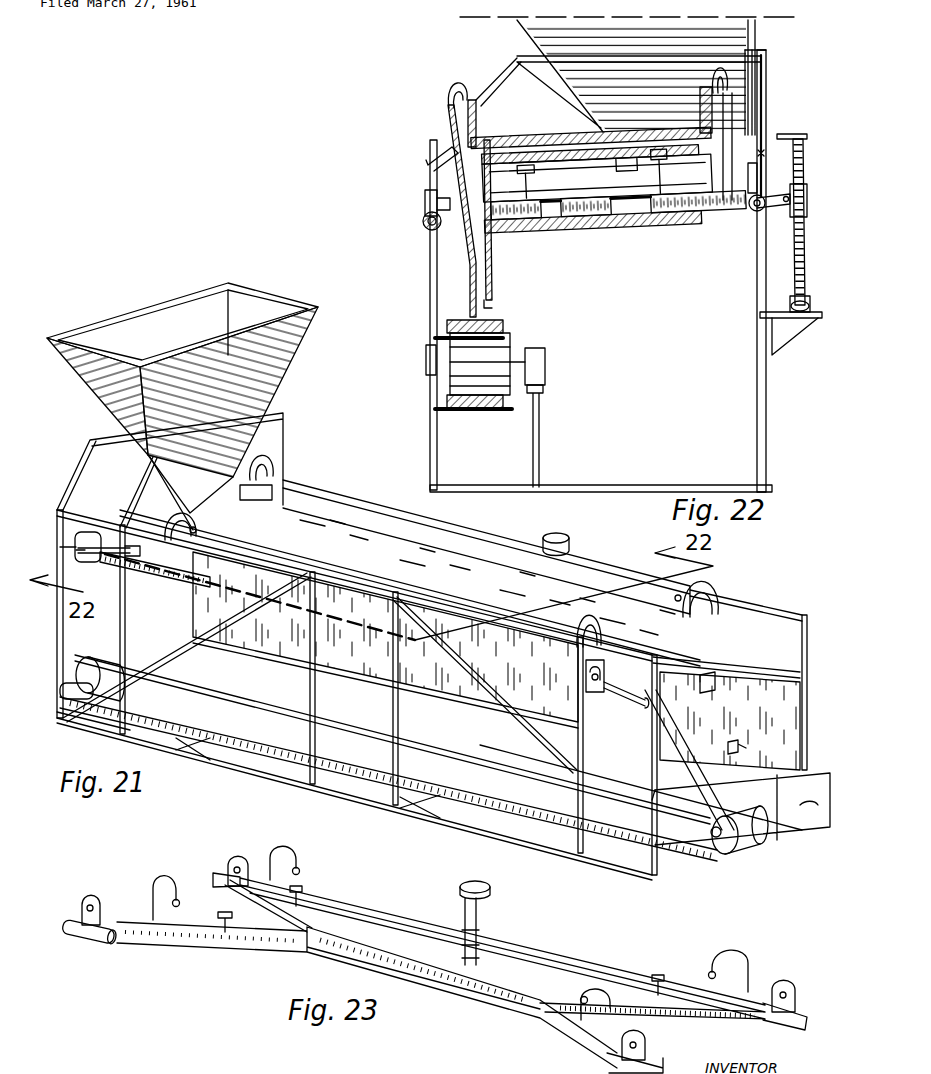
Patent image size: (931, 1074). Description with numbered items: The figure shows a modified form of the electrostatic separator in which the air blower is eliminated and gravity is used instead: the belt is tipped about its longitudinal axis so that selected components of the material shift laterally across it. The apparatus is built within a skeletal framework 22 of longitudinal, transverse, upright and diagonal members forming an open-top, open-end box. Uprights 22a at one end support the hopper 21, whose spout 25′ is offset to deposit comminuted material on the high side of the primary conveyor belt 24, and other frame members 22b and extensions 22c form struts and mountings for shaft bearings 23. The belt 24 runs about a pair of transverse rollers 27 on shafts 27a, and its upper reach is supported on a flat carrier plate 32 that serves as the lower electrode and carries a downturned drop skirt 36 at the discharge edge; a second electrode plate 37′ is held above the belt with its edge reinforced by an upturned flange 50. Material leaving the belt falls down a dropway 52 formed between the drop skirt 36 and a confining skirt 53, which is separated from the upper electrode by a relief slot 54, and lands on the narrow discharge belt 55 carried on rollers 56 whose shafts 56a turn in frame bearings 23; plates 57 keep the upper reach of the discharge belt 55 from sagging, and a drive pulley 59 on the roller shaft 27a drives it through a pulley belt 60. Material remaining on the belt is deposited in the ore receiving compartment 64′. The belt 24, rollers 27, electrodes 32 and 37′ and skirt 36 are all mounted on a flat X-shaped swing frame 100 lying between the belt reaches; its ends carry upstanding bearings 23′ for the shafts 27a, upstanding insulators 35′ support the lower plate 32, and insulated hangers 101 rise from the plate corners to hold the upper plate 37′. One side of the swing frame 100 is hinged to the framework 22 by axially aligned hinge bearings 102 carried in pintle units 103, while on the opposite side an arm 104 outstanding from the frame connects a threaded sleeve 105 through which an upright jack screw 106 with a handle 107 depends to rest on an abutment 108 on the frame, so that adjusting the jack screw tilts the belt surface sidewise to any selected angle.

In FIG. 22, the hopper 21 is at (747, 44).
In FIG. 21, the hopper 21 is at (300, 330).
In FIG. 22, the skeletal framework 22 is at (714, 486).
In FIG. 21, the skeletal framework 22 is at (262, 768).
In FIG. 21, the uprights 22a is at (80, 455).
In FIG. 21, the frame members 22b is at (74, 545).
In FIG. 21, the frame extensions 22c is at (706, 858).
In FIG. 21, the shaft bearings 23 is at (60, 690).
In FIG. 22, the upstanding bearings 23′ is at (425, 204).
In FIG. 21, the upstanding bearings 23′ is at (62, 554).
In FIG. 23, the upstanding bearings 23′ is at (80, 912).
In FIG. 22, the primary conveyor belt 24 is at (632, 230).
In FIG. 21, the primary conveyor belt 24 is at (250, 486).
In FIG. 22, the hopper spout 25′ is at (705, 124).
In FIG. 21, the hopper spout 25′ is at (258, 470).
In FIG. 22, the transverse rollers 27 is at (614, 181).
In FIG. 21, the transverse rollers 27 is at (133, 512).
In FIG. 22, the roller shafts 27a is at (427, 182).
In FIG. 22, the carrier plate 32 is at (619, 168).
In FIG. 22, the upstanding insulators 35′ is at (662, 180).
In FIG. 23, the upstanding insulators 35′ is at (222, 912).
In FIG. 22, the drop skirt 36 is at (492, 270).
In FIG. 22, the upper electrode plate 37′ is at (515, 140).
In FIG. 21, the upper electrode plate 37′ is at (449, 539).
In FIG. 22, the upturned reinforcing flange 50 is at (480, 66).
In FIG. 22, the dropway 52 is at (494, 306).
In FIG. 21, the dropway 52 is at (580, 708).
In FIG. 22, the confining skirt 53 is at (470, 268).
In FIG. 21, the confining skirt 53 is at (385, 640).
In FIG. 22, the relief slot 54 is at (445, 140).
In FIG. 22, the discharge belt 55 is at (503, 320).
In FIG. 21, the discharge belt 55 is at (252, 730).
In FIG. 22, the discharge belt rollers 56 is at (510, 350).
In FIG. 21, the discharge belt rollers 56 is at (76, 660).
In FIG. 21, the discharge roller shafts 56a is at (738, 848).
In FIG. 21, the support plates 57 is at (170, 720).
In FIG. 21, the drive pulley 59 is at (586, 664).
In FIG. 21, the pulley belt 60 is at (690, 772).
In FIG. 21, the ore receiving compartment 64′ is at (741, 684).
In FIG. 22, the swing frame 100 is at (726, 208).
In FIG. 22, the insulated hangers 101 is at (733, 126).
In FIG. 21, the insulated hangers 101 is at (710, 580).
In FIG. 23, the insulated hangers 101 is at (280, 846).
In FIG. 22, the hinge bearings 102 is at (424, 218).
In FIG. 23, the hinge bearings 102 is at (630, 1062).
In FIG. 22, the pintle units 103 is at (424, 230).
In FIG. 22, the arm 104 is at (757, 211).
In FIG. 22, the threaded sleeve 105 is at (785, 226).
In FIG. 22, the jack screw 106 is at (800, 157).
In FIG. 22, the handle 107 is at (808, 136).
In FIG. 22, the abutment 108 is at (778, 330).